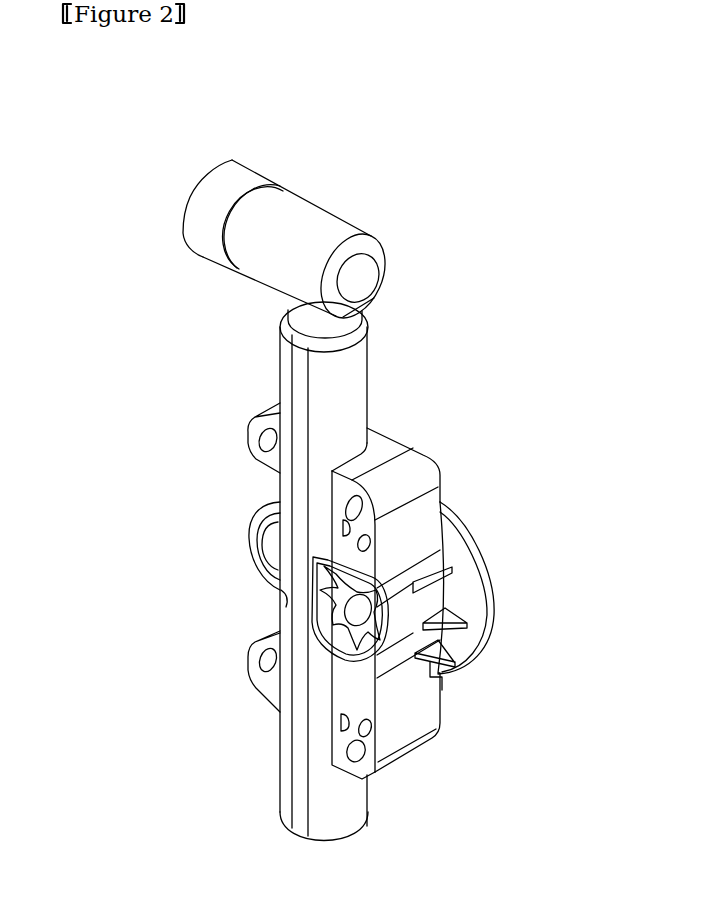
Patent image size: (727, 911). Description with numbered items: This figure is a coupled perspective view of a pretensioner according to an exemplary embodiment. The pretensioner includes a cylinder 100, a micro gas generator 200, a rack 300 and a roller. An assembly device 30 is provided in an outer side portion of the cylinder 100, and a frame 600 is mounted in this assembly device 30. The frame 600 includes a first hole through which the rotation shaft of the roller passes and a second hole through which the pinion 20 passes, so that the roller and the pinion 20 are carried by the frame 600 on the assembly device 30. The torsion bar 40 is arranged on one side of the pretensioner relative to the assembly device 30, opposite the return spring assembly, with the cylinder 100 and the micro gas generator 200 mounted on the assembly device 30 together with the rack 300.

The cylinder 100 is at (353, 379).
The micro gas generator 200 is at (313, 228).
The assembly device 30 is at (418, 518).
The frame 600 is at (495, 598).
The torsion bar 40 is at (268, 542).
The rack 300 is at (327, 575).
The pinion 20 is at (313, 634).